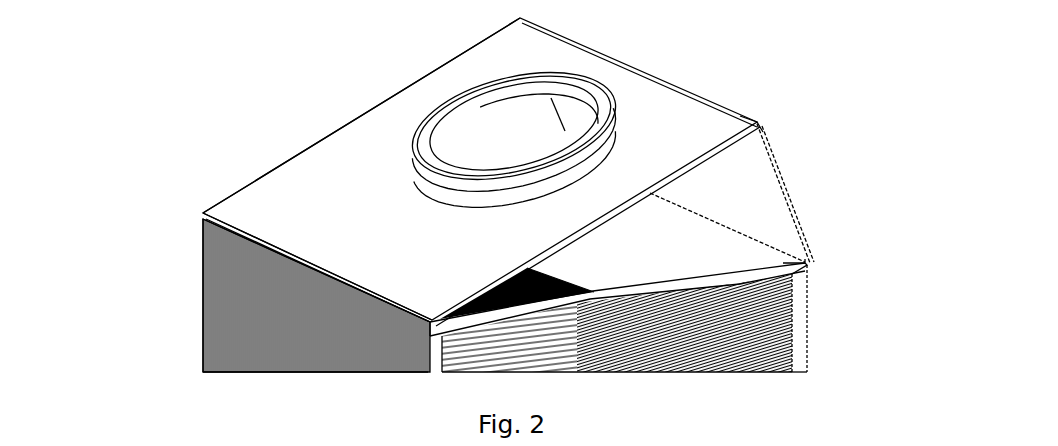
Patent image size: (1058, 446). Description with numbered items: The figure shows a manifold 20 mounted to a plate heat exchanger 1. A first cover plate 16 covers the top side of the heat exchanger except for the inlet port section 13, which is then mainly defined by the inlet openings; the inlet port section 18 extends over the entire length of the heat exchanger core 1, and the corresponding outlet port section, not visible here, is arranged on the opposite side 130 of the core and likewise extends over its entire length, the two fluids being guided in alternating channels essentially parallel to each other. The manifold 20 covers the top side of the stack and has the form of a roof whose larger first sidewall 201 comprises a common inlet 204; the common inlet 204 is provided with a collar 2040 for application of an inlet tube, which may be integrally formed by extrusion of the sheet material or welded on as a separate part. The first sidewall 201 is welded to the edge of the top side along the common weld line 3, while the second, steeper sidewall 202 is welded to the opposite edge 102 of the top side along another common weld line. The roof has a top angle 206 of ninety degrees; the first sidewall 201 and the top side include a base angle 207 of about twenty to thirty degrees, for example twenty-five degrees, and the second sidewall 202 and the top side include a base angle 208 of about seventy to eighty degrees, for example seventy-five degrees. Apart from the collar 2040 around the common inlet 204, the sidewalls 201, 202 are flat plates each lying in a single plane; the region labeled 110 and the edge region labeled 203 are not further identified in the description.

The plate heat exchanger 1 is at (318, 387).
The common weld line 3 is at (215, 225).
The inlet port section 13 is at (516, 304).
The first cover plate 16 is at (725, 250).
The inlet port section 18 is at (231, 322).
The manifold 20 is at (487, 64).
The opposite edge 102 is at (800, 267).
The left wall outer surface 110 is at (218, 349).
The opposite side 130 is at (806, 341).
The first sidewall 201 is at (325, 172).
The second sidewall 202 is at (783, 188).
The lid front edge 203 is at (250, 233).
The common inlet 204 is at (482, 118).
The top angle 206 is at (747, 148).
The base angle 207 is at (474, 297).
The base angle 208 is at (783, 263).
The collar 2040 is at (568, 82).